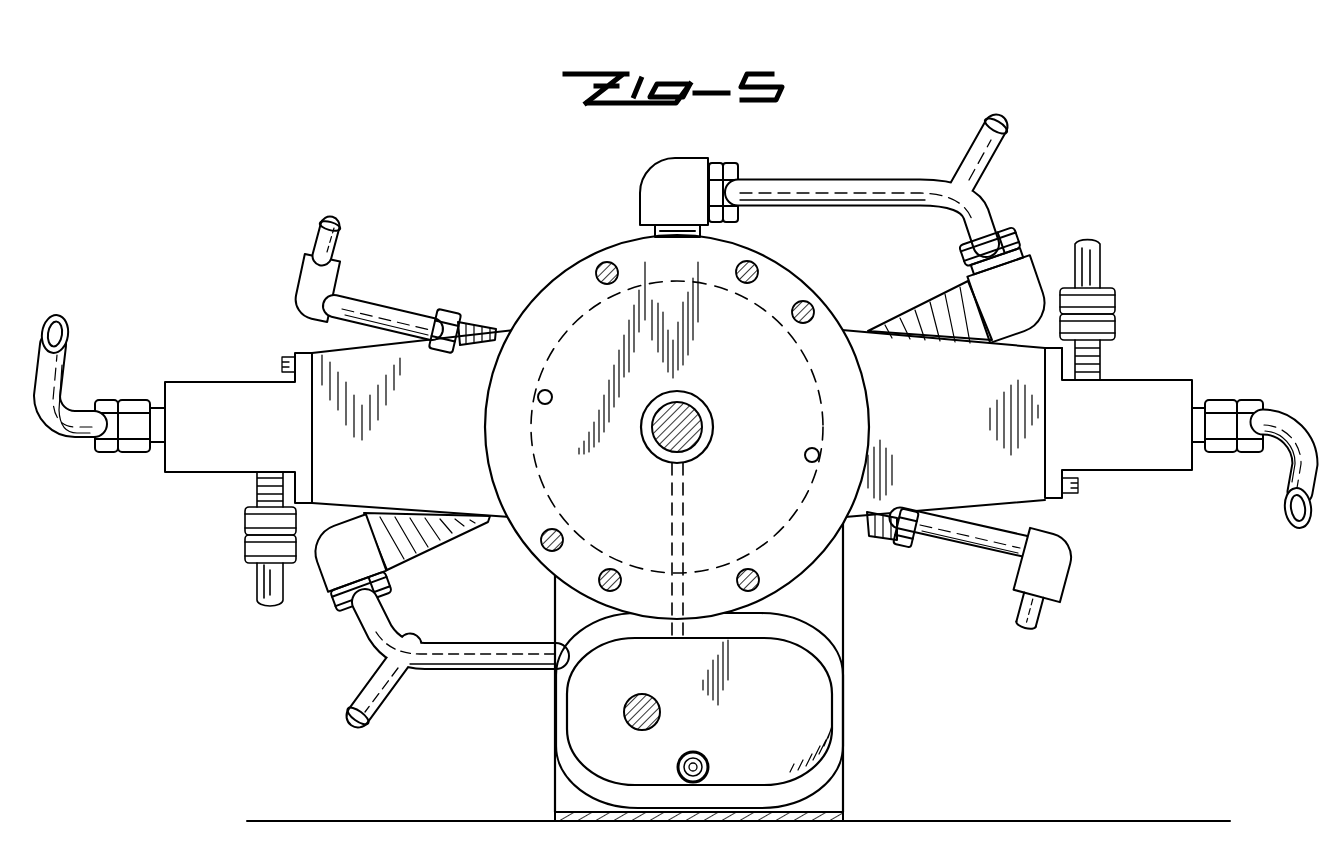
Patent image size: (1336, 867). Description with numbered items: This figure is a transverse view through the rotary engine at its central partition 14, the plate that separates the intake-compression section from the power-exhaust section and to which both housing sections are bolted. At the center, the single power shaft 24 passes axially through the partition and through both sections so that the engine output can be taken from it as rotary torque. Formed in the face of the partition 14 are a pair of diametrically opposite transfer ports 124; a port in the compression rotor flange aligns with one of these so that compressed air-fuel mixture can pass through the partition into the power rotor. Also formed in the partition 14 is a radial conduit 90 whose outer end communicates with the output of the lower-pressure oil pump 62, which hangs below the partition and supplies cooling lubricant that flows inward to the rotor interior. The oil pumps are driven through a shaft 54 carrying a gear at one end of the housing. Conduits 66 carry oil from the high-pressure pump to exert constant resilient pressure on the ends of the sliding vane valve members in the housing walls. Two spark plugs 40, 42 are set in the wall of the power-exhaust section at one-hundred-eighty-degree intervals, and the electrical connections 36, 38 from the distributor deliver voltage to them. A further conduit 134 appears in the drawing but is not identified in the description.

The central partition 14 is at (724, 257).
The power shaft 24 is at (692, 410).
The electrical connection 36 is at (318, 240).
The electrical connection 38 is at (1022, 606).
The spark plug 40 is at (378, 318).
The spark plug 42 is at (957, 538).
The shaft 54 is at (633, 702).
The oil pump 62 is at (778, 743).
The conduits 66 is at (69, 340).
The radial conduit 90 is at (688, 501).
The transfer ports 124 is at (547, 394).
The conduit 134 is at (797, 178).